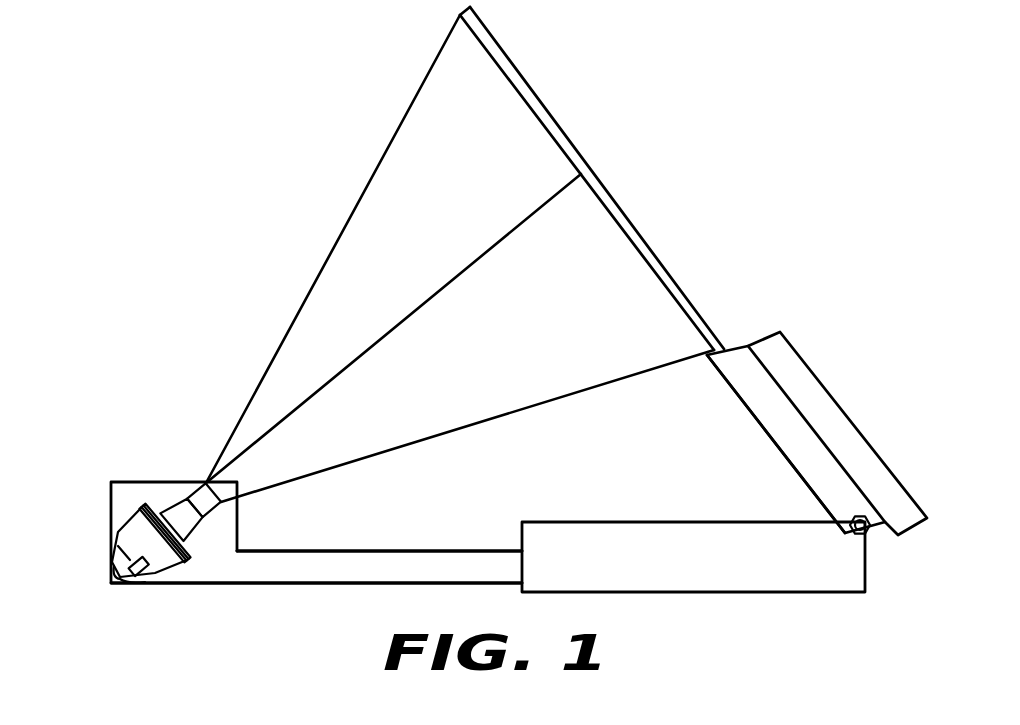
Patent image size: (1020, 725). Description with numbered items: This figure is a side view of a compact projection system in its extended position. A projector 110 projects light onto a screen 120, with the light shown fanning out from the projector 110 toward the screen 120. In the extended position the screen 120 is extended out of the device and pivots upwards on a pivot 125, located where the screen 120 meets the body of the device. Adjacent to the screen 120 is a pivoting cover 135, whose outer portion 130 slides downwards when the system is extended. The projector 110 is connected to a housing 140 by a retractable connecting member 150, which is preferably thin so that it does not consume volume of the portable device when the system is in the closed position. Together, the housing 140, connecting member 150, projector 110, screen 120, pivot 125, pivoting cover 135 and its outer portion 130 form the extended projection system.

The projector 110 is at (122, 533).
The screen 120 is at (553, 115).
The pivot 125 is at (868, 532).
The outer portion 130 is at (813, 370).
The pivoting cover 135 is at (790, 465).
The housing 140 is at (753, 592).
The connecting member 150 is at (330, 583).